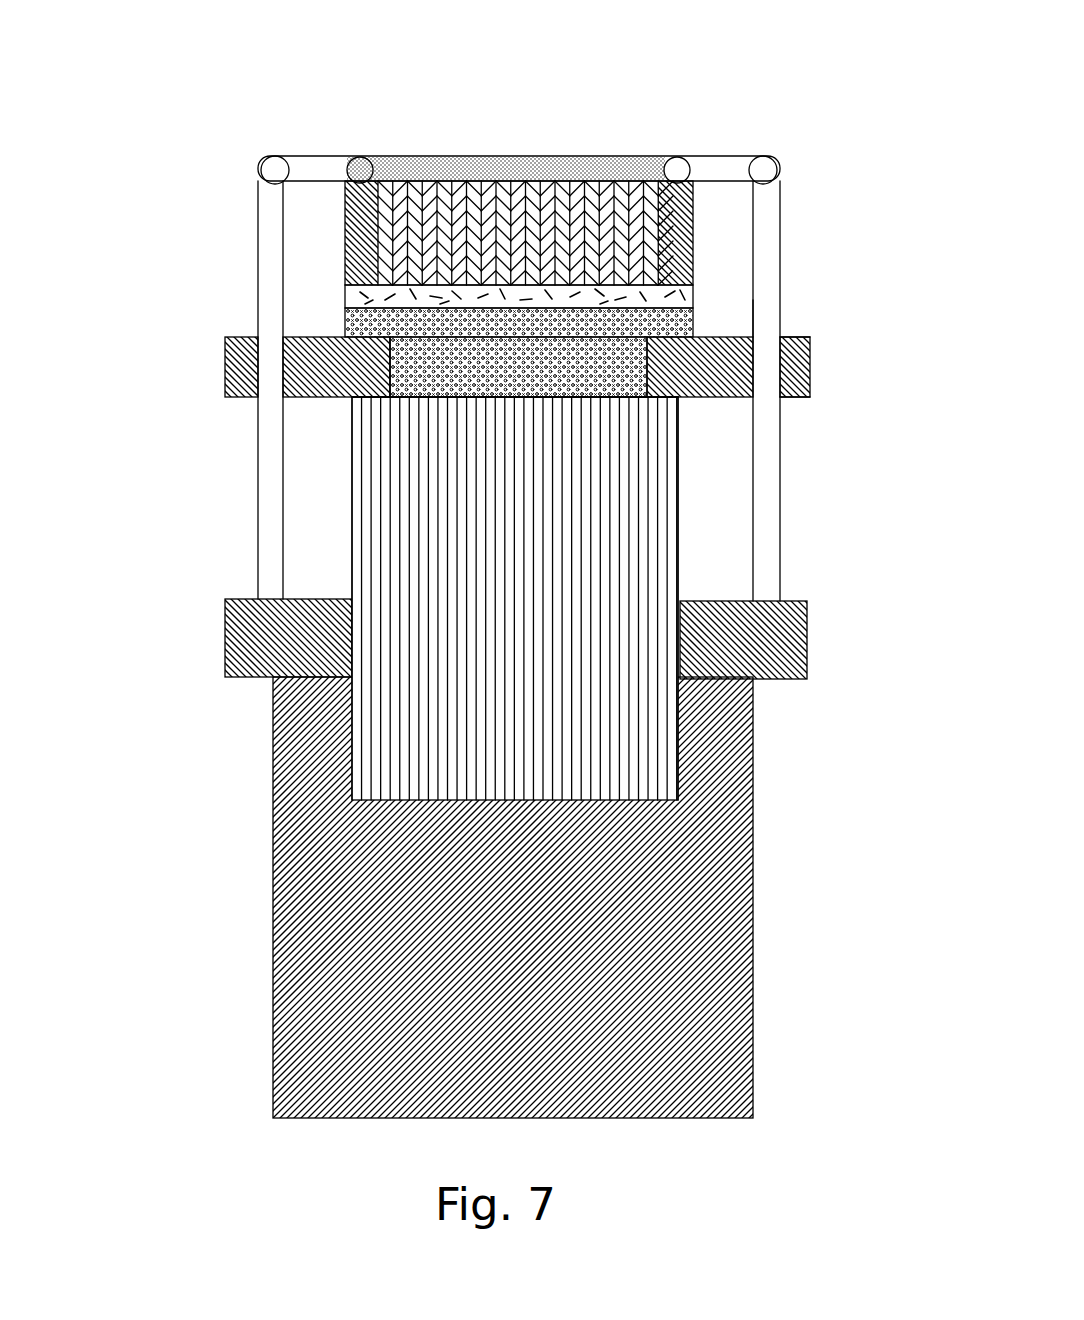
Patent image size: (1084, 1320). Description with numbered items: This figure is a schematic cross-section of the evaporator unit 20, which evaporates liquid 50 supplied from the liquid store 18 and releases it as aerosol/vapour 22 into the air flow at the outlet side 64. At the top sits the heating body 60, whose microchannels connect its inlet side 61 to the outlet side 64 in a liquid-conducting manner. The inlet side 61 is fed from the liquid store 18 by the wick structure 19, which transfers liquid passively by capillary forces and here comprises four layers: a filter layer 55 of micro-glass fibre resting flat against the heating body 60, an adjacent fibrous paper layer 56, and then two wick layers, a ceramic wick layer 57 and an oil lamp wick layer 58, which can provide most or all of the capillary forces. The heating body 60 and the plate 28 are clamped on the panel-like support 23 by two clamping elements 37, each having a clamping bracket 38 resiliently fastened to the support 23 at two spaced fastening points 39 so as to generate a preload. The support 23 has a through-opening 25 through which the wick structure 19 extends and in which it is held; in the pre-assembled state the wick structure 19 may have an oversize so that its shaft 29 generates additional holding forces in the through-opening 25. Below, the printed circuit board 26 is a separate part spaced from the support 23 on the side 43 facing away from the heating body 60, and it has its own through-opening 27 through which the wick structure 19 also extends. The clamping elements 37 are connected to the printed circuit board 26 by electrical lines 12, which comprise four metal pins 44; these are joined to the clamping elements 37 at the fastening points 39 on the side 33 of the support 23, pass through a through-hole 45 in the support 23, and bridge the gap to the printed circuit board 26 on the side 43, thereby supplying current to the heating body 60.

The electrical lines 12 is at (273, 430).
The liquid store 18 is at (542, 897).
The wick structure 19 is at (128, 288).
The evaporator unit 20 is at (540, 301).
The aerosol/vapour 22 is at (518, 205).
The support 23 is at (737, 374).
The through-opening 25 is at (700, 397).
The printed circuit board 26 is at (773, 645).
The through-opening 27 is at (676, 638).
The plate 28 is at (252, 283).
The shaft 29 is at (431, 600).
The side of the support 33 is at (793, 338).
The clamping element 37 is at (295, 141).
The clamping bracket 38 is at (540, 325).
The fastening point 39 is at (750, 320).
The side facing away 43 is at (795, 402).
The metal pin 44 is at (843, 391).
The through-hole 45 is at (245, 358).
The liquid 50 is at (482, 975).
The filter layer 55 is at (345, 290).
The fibrous paper layer 56 is at (345, 320).
The ceramic wick layer 57 is at (503, 379).
The oil lamp wick layer 58 is at (516, 626).
The heating body 60 is at (681, 234).
The inlet side 61 is at (357, 383).
The outlet side 64 is at (478, 156).